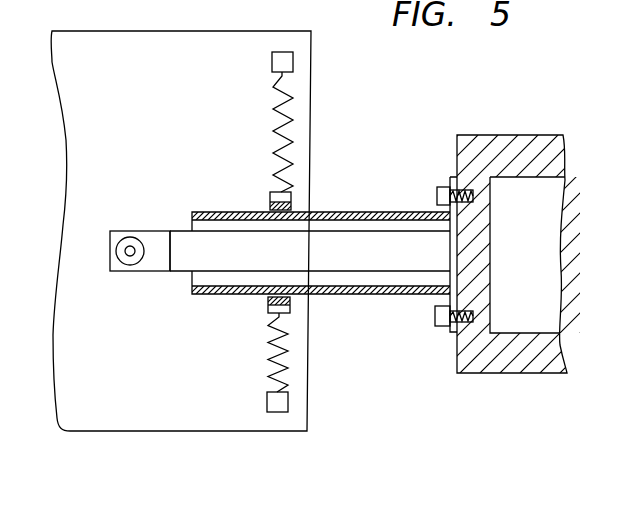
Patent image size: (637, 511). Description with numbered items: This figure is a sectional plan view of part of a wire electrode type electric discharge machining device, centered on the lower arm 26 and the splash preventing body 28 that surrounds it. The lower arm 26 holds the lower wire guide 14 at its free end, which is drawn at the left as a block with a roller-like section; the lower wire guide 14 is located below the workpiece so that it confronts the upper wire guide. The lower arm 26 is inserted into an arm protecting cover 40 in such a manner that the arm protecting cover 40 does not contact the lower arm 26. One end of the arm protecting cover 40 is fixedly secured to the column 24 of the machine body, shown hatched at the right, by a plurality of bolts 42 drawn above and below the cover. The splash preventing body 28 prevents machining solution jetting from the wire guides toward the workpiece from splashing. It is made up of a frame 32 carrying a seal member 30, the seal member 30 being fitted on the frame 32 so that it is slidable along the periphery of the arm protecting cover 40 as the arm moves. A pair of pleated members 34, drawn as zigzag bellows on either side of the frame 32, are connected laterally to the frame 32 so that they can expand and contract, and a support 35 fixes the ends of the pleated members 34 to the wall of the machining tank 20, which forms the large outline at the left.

The lower wire guide 14 is at (138, 271).
The machining tank 20 is at (177, 431).
The column 24 is at (495, 366).
The lower arm 26 is at (181, 272).
The splash preventing body 28 is at (276, 412).
The seal member 30 is at (296, 208).
The frame 32 is at (292, 197).
The pleated members 34 is at (294, 117).
The support 35 is at (294, 61).
The arm protecting cover 40 is at (228, 294).
The bolts 42 is at (443, 187).